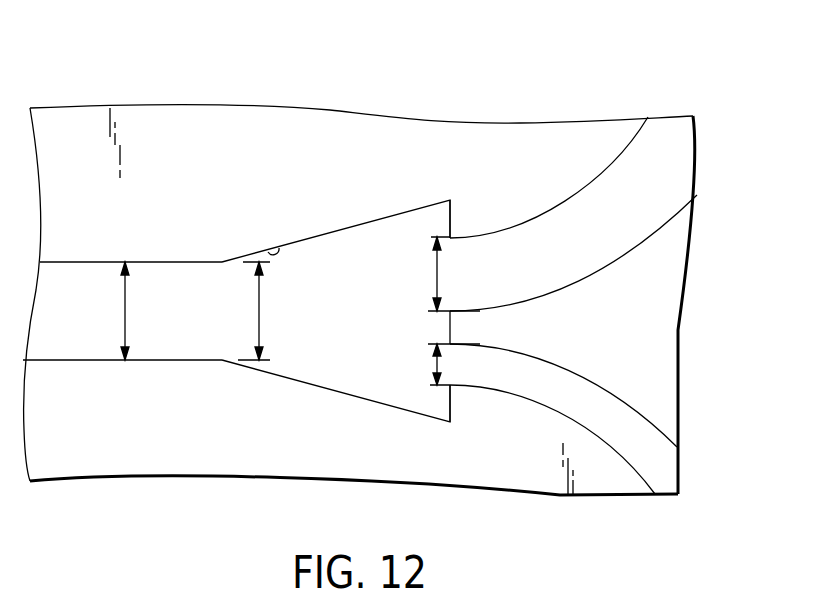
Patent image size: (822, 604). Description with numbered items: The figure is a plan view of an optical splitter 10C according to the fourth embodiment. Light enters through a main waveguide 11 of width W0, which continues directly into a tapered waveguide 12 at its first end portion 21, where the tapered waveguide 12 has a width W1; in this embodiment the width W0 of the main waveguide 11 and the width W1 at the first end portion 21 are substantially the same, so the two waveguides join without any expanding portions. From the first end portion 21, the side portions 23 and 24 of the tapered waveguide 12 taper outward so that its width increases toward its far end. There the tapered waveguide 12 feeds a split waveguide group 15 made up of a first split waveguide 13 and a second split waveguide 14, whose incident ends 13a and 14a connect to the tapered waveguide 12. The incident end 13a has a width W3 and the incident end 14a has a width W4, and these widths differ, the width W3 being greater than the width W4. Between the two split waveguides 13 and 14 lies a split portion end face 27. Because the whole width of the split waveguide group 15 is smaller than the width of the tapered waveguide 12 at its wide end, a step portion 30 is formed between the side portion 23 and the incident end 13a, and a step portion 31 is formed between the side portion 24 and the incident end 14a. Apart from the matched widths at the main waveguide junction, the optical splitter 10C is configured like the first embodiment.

The optical splitter 10C is at (700, 91).
The main waveguide 11 is at (76, 286).
The tapered waveguide 12 is at (335, 265).
The first split waveguide 13 is at (687, 157).
The incident end 13a is at (455, 258).
The second split waveguide 14 is at (662, 472).
The incident end 14a is at (455, 365).
The split waveguide group 15 is at (531, 167).
The first end portion 21 is at (228, 328).
The side portion 23 is at (279, 248).
The side portion 24 is at (289, 375).
The split portion end face 27 is at (444, 328).
The step portion 30 is at (449, 218).
The step portion 31 is at (449, 395).
The width of the main waveguide W0 is at (125, 305).
The width of the tapered waveguide at the first end portion W1 is at (259, 305).
The width of the incident end of the first split waveguide W3 is at (437, 267).
The width of the incident end of the second split waveguide W4 is at (437, 366).